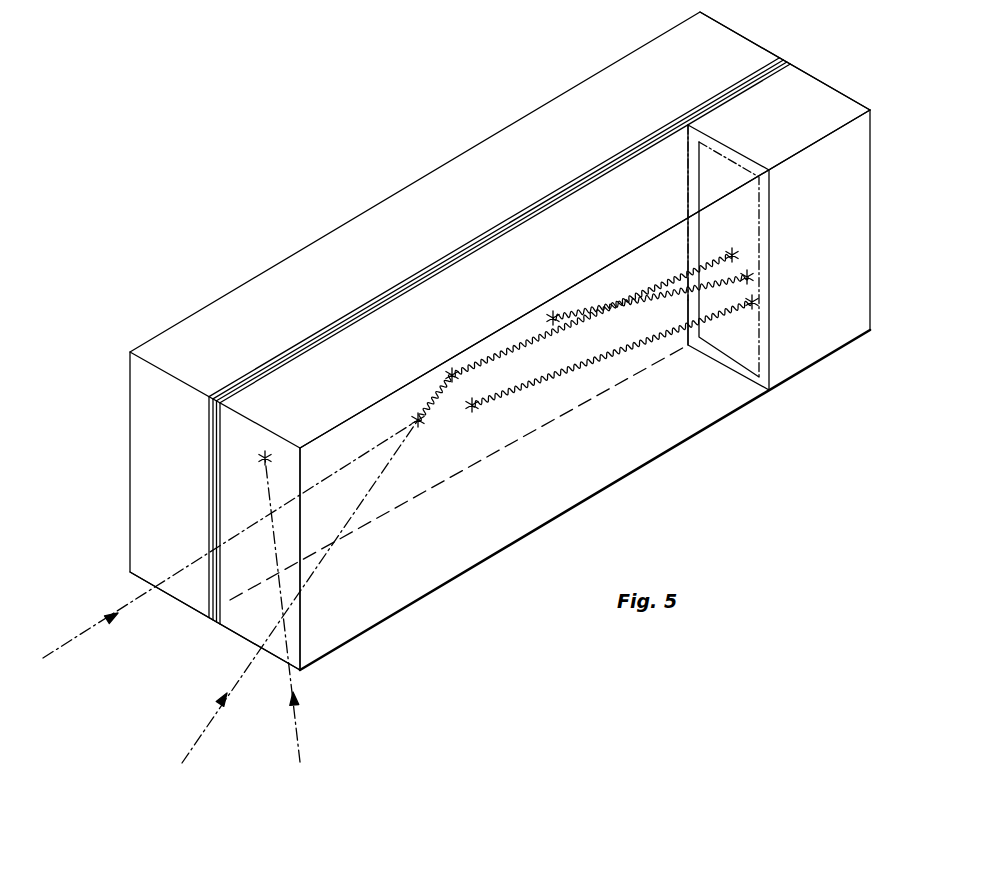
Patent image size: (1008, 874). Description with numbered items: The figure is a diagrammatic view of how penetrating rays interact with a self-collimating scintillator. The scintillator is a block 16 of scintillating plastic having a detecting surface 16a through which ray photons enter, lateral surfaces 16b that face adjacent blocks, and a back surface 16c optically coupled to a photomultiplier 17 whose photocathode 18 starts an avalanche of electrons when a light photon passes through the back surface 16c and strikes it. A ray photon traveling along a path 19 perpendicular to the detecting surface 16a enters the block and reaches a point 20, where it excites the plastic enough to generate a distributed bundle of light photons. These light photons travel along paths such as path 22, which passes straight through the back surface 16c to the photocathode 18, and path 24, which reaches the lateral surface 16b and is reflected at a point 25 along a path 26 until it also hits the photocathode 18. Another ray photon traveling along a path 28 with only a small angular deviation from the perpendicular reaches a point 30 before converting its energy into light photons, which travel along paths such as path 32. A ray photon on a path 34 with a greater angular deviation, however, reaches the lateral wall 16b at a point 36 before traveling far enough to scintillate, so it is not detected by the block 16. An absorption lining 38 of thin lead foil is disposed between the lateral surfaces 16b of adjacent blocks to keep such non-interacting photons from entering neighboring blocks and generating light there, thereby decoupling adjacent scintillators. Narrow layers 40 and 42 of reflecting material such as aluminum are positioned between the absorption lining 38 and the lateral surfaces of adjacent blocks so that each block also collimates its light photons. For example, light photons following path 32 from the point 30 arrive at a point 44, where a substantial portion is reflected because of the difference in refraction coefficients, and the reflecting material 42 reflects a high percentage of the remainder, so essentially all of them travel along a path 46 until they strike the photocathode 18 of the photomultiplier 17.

The block 16 is at (433, 205).
The detecting surface 16a is at (252, 612).
The lateral surfaces 16b is at (318, 362).
The back surface 16c is at (728, 143).
The photomultiplier 17 is at (830, 92).
The photocathode 18 is at (748, 243).
The path 19 is at (103, 622).
The point 20 is at (472, 412).
The path 22 is at (520, 380).
The path 24 is at (530, 340).
The point 25 is at (558, 312).
The path 26 is at (608, 302).
The path 28 is at (200, 742).
The point 30 is at (415, 420).
The path 32 is at (433, 393).
The path 34 is at (300, 740).
The point 36 is at (268, 455).
The absorption lining 38 is at (212, 412).
The layer of reflecting material 40 is at (210, 445).
The layer of reflecting material 42 is at (220, 480).
The point 44 is at (453, 372).
The path 46 is at (630, 340).